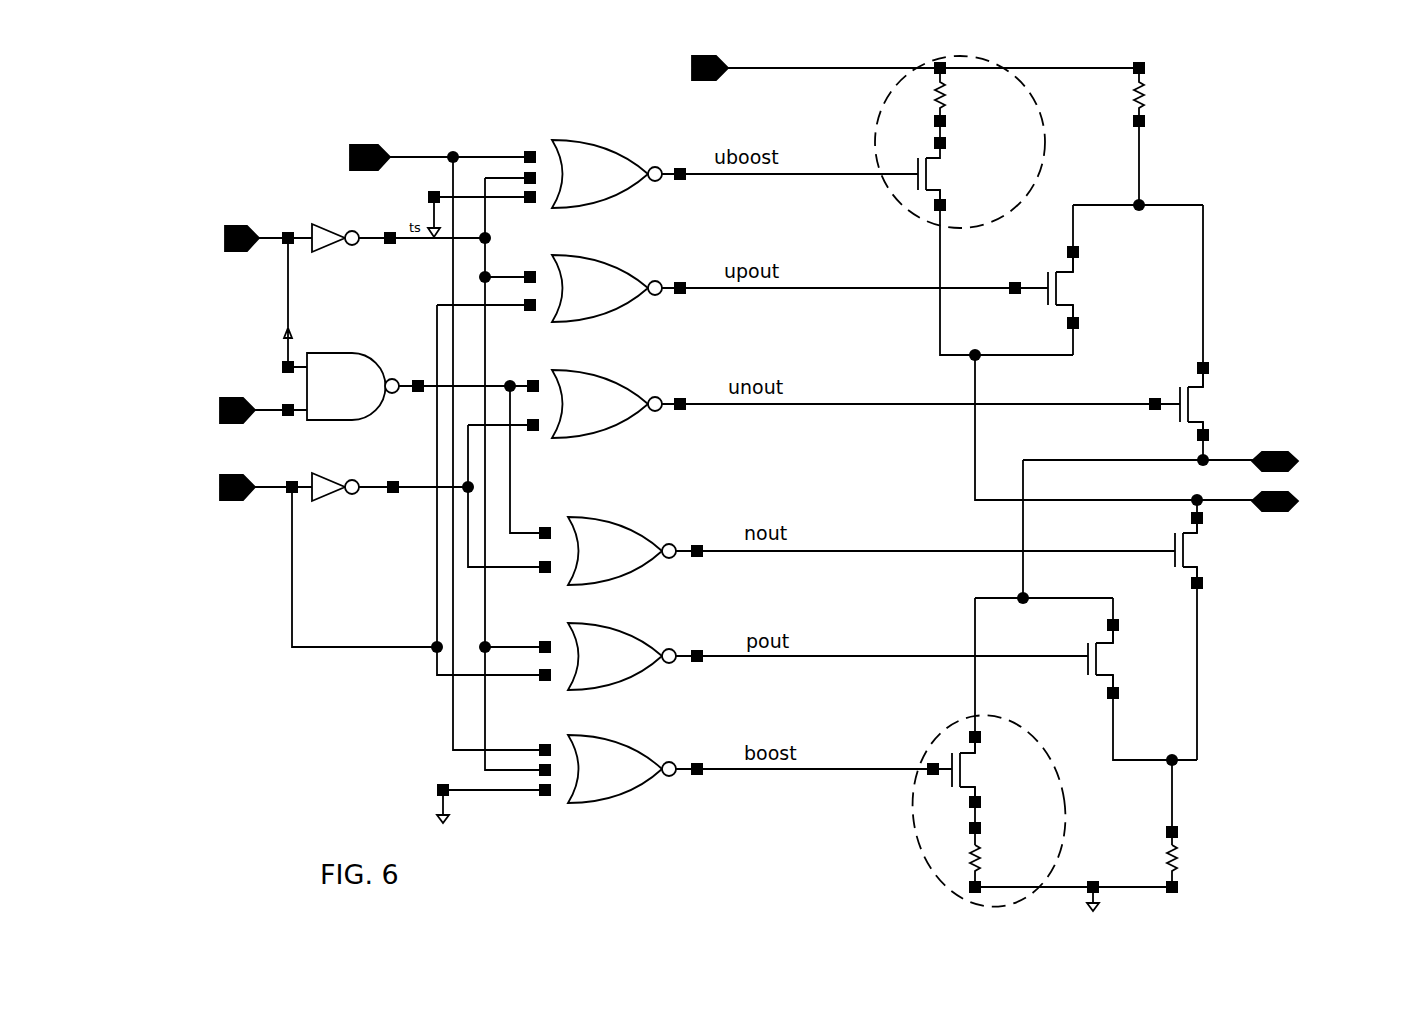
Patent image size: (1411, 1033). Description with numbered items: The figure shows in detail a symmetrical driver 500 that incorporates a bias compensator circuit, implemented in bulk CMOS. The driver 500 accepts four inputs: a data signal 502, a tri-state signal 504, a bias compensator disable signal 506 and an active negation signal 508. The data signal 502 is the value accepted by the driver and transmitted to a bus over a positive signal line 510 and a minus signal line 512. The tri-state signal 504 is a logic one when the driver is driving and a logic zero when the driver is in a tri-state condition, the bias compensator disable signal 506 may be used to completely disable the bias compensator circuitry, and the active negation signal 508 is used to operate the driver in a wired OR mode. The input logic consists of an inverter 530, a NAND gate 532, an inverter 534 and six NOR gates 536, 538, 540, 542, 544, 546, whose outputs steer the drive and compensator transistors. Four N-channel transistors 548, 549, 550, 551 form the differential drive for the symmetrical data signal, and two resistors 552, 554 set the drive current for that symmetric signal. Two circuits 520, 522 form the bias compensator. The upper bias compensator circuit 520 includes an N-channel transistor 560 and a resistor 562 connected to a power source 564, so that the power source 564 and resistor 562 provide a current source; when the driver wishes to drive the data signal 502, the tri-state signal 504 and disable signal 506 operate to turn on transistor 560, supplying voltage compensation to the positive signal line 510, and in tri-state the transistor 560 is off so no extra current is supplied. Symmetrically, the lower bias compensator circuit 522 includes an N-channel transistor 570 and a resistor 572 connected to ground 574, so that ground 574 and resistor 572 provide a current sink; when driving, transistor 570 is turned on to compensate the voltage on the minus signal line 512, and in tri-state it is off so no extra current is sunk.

The symmetrical driver 500 is at (308, 718).
The data signal 502 is at (233, 500).
The tri-state signal 504 is at (237, 251).
The bias compensator disable signal 506 is at (352, 143).
The active negation signal 508 is at (232, 423).
The positive signal line 510 is at (1290, 512).
The minus signal line 512 is at (1290, 451).
The bias compensator circuit 520 is at (911, 214).
The bias compensator circuit 522 is at (940, 858).
The inverter 530 is at (323, 248).
The NAND gate 532 is at (355, 408).
The inverter 534 is at (330, 497).
The NOR gate 536 is at (627, 190).
The NOR gate 538 is at (620, 307).
The NOR gate 540 is at (620, 415).
The NOR gate 542 is at (632, 563).
The NOR gate 544 is at (638, 670).
The NOR gate 546 is at (640, 780).
The N-channel transistor 548 is at (1082, 268).
The N-channel transistor 549 is at (1205, 410).
The N-channel transistor 550 is at (1118, 639).
The N-channel transistor 551 is at (1195, 553).
The resistor 552 is at (1146, 92).
The resistor 554 is at (1176, 872).
The N-channel transistor 560 is at (930, 161).
The resistor 562 is at (946, 100).
The power source 564 is at (708, 80).
The N-channel transistor 570 is at (975, 776).
The resistor 572 is at (980, 860).
The ground 574 is at (1100, 903).